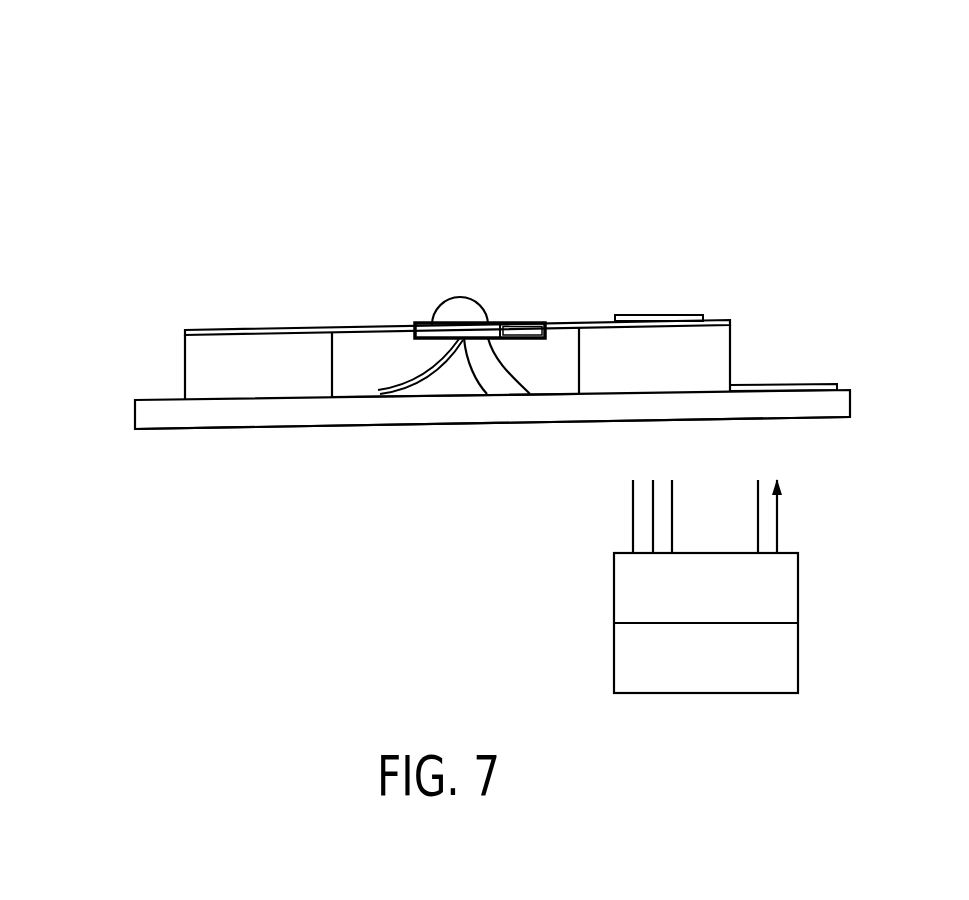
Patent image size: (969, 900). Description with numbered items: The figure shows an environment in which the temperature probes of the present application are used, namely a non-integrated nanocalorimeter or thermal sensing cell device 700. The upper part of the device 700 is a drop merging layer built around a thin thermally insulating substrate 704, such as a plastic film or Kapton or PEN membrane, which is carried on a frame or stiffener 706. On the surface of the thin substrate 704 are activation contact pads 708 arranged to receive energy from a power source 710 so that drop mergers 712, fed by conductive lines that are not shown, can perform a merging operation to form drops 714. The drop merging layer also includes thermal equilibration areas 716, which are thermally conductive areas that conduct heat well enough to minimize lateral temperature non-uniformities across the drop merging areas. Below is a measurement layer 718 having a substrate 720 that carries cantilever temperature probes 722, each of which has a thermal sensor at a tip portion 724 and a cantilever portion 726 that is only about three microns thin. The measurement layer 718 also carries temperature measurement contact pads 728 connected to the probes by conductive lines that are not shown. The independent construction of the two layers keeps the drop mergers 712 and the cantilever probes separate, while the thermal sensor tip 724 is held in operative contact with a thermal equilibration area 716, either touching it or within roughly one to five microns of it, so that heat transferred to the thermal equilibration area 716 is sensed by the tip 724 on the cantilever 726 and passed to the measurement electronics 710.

The non-integrated nanocalorimeter device 700 is at (156, 100).
The thin thermally insulating substrate 704 is at (188, 312).
The frame 706 is at (185, 368).
The activation contact pads 708 is at (686, 316).
The power source and measurement electronics 710 is at (614, 623).
The drop mergers 712 is at (423, 312).
The drops 714 is at (465, 315).
The thermal equilibration areas 716 is at (530, 394).
The measurement layer 718 is at (108, 403).
The substrate 720 is at (275, 430).
The cantilever temperature probes 722 is at (383, 378).
The tip portion 724 is at (487, 394).
The cantilever portion 726 is at (437, 379).
The temperature measurement contact pads 728 is at (815, 385).